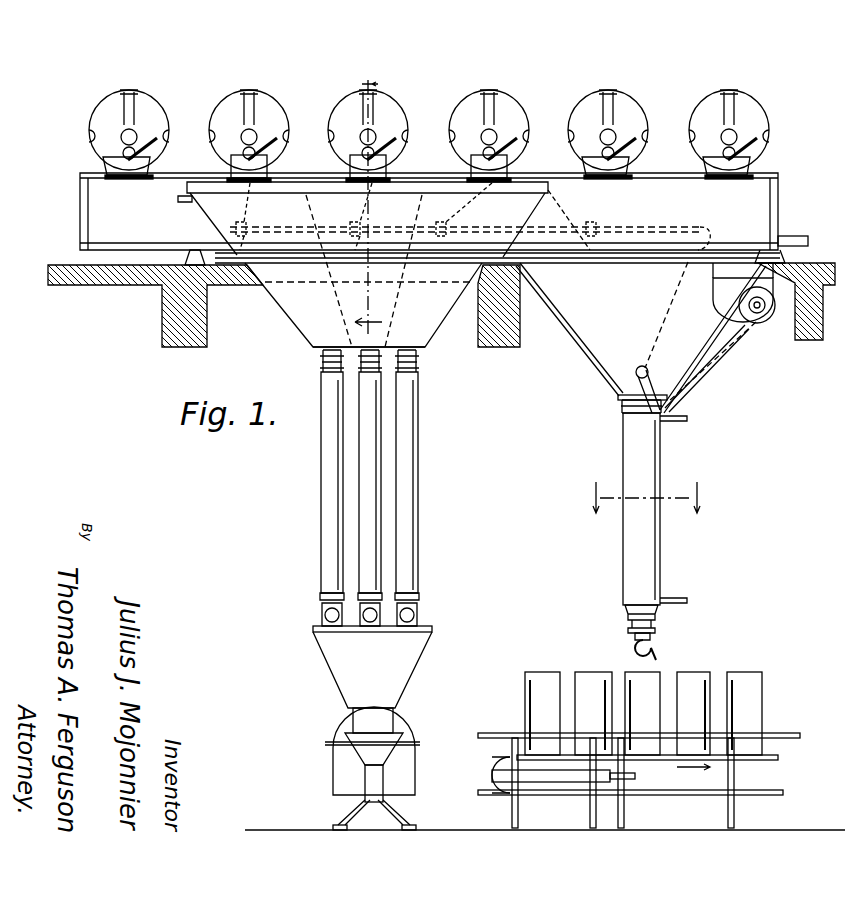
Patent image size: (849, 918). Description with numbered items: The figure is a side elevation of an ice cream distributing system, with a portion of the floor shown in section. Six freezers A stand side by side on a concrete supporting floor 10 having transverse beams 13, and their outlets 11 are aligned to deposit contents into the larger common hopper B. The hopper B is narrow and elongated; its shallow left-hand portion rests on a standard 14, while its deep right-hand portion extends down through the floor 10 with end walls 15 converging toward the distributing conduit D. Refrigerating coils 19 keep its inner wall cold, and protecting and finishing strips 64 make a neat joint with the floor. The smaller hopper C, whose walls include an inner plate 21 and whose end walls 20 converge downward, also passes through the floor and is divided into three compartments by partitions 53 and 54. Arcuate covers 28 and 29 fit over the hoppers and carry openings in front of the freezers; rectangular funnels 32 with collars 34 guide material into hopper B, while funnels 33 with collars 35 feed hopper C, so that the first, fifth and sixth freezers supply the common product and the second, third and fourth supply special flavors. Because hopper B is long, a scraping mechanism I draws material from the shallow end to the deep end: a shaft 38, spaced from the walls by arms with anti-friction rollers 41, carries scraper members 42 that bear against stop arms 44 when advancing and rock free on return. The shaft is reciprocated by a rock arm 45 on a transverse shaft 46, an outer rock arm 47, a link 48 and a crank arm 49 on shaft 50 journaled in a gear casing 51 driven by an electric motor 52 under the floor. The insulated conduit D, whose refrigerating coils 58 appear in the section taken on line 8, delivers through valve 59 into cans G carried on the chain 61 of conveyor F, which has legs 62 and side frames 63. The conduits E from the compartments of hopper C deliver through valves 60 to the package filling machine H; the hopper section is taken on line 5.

The section line 5— 5 is at (368, 203).
The section line 8— 8 is at (642, 497).
The supporting floor 10 is at (62, 265).
The outlets 11 is at (92, 140).
The transverse beams 13 is at (185, 347).
The standard 14 is at (186, 254).
The end walls 15 is at (580, 368).
The refrigerating coils 19 is at (798, 238).
The end walls 20 is at (292, 330).
The inner plate 21 is at (176, 210).
The cover 28 is at (329, 249).
The cover 29 is at (264, 185).
The funnels 32 is at (106, 166).
The funnels 33 is at (231, 168).
The collar 34 is at (152, 178).
The collar 35 is at (270, 180).
The shaft 38 is at (575, 230).
The anti-friction rollers 41 is at (245, 236).
The scraper members 42 is at (423, 216).
The stop arm 44 is at (450, 225).
The rock arm 45 is at (660, 318).
The transverse shaft 46 is at (638, 366).
The rock arm 47 is at (638, 395).
The link 48 is at (700, 378).
The crank arm 49 is at (712, 362).
The shaft 50 is at (760, 312).
The casing 51 is at (722, 326).
The electric motor 52 is at (740, 298).
The partition 53 is at (336, 303).
The partition 54 is at (400, 300).
The refrigerating coils 58 is at (678, 421).
The valve 59 is at (656, 645).
The valves 60 is at (322, 614).
The conveyor chain 61 is at (778, 758).
The legs 62 is at (570, 815).
The side frames 63 is at (485, 750).
The protecting and finishing strips 64 is at (755, 258).
The freezers A is at (410, 121).
The common hopper B is at (84, 210).
The smaller hopper C is at (418, 204).
The distributing conduit D is at (612, 446).
The distributing conduits E is at (320, 437).
The conveyor F is at (780, 733).
The cans G is at (556, 680).
The package filling machine H is at (336, 663).
The scraping mechanism I is at (242, 222).